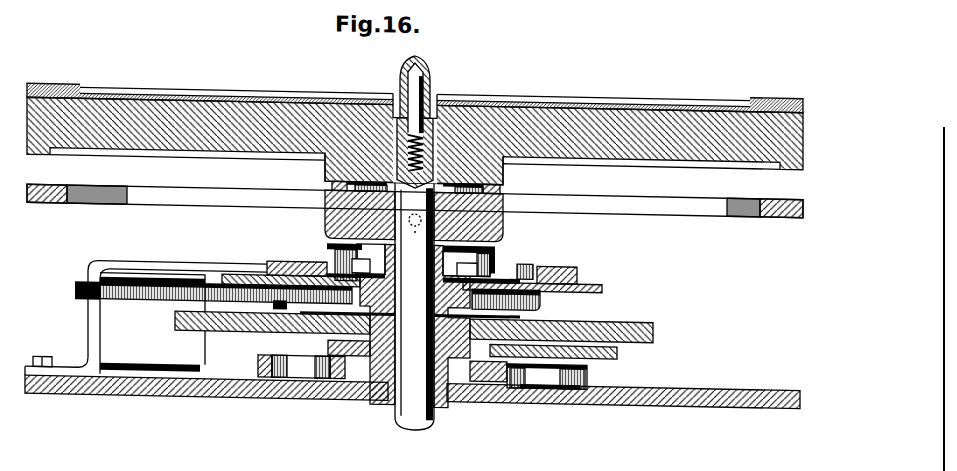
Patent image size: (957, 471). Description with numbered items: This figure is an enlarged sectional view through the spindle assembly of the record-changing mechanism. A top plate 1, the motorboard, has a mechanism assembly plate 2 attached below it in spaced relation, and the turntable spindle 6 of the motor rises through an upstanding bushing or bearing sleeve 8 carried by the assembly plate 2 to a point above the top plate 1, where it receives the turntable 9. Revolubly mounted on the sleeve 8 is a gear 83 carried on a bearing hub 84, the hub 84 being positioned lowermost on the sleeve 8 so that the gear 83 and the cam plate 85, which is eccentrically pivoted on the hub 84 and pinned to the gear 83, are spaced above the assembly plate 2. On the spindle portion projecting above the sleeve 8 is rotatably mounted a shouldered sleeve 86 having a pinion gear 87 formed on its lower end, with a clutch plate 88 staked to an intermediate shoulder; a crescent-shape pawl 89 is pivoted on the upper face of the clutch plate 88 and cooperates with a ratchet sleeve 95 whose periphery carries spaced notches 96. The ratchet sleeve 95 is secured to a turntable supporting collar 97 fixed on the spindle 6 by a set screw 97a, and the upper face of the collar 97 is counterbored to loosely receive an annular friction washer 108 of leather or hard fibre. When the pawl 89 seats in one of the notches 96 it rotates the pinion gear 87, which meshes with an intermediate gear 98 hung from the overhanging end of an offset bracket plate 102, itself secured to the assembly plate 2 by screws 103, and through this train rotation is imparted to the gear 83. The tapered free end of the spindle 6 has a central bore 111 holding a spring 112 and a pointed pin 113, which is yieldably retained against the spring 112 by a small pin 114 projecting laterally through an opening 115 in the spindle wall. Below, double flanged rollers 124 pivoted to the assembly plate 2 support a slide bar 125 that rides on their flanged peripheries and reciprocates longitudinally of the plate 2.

The top plate 1 is at (777, 210).
The mechanism assembly plate 2 is at (712, 385).
The turntable spindle 6 is at (413, 420).
The bushing or bearing sleeve 8 is at (383, 405).
The turntable 9 is at (548, 108).
The gear 83 is at (630, 318).
The bearing hub 84 is at (458, 395).
The cam plate 85 is at (620, 349).
The shouldered sleeve 86 is at (463, 277).
The pinion gear 87 is at (540, 303).
The clutch plate 88 is at (600, 280).
The crescent-shape pawl 89 is at (562, 265).
The ratchet sleeve 95 is at (328, 246).
The recesses or notches 96 is at (320, 264).
The turntable supporting collar 97 is at (505, 221).
The set screw 97a is at (412, 237).
The intermediate gear 98 is at (148, 303).
The offset bracket plate 102 is at (150, 267).
The screws 103 is at (50, 364).
The annular friction washer 108 is at (500, 190).
The central bore 111 is at (330, 178).
The spring 112 is at (330, 178).
The pin 113 is at (407, 72).
The small pin 114 is at (433, 93).
The opening 115 is at (408, 94).
The double flanged rollers 124 is at (588, 370).
The slide bar 125 is at (345, 372).